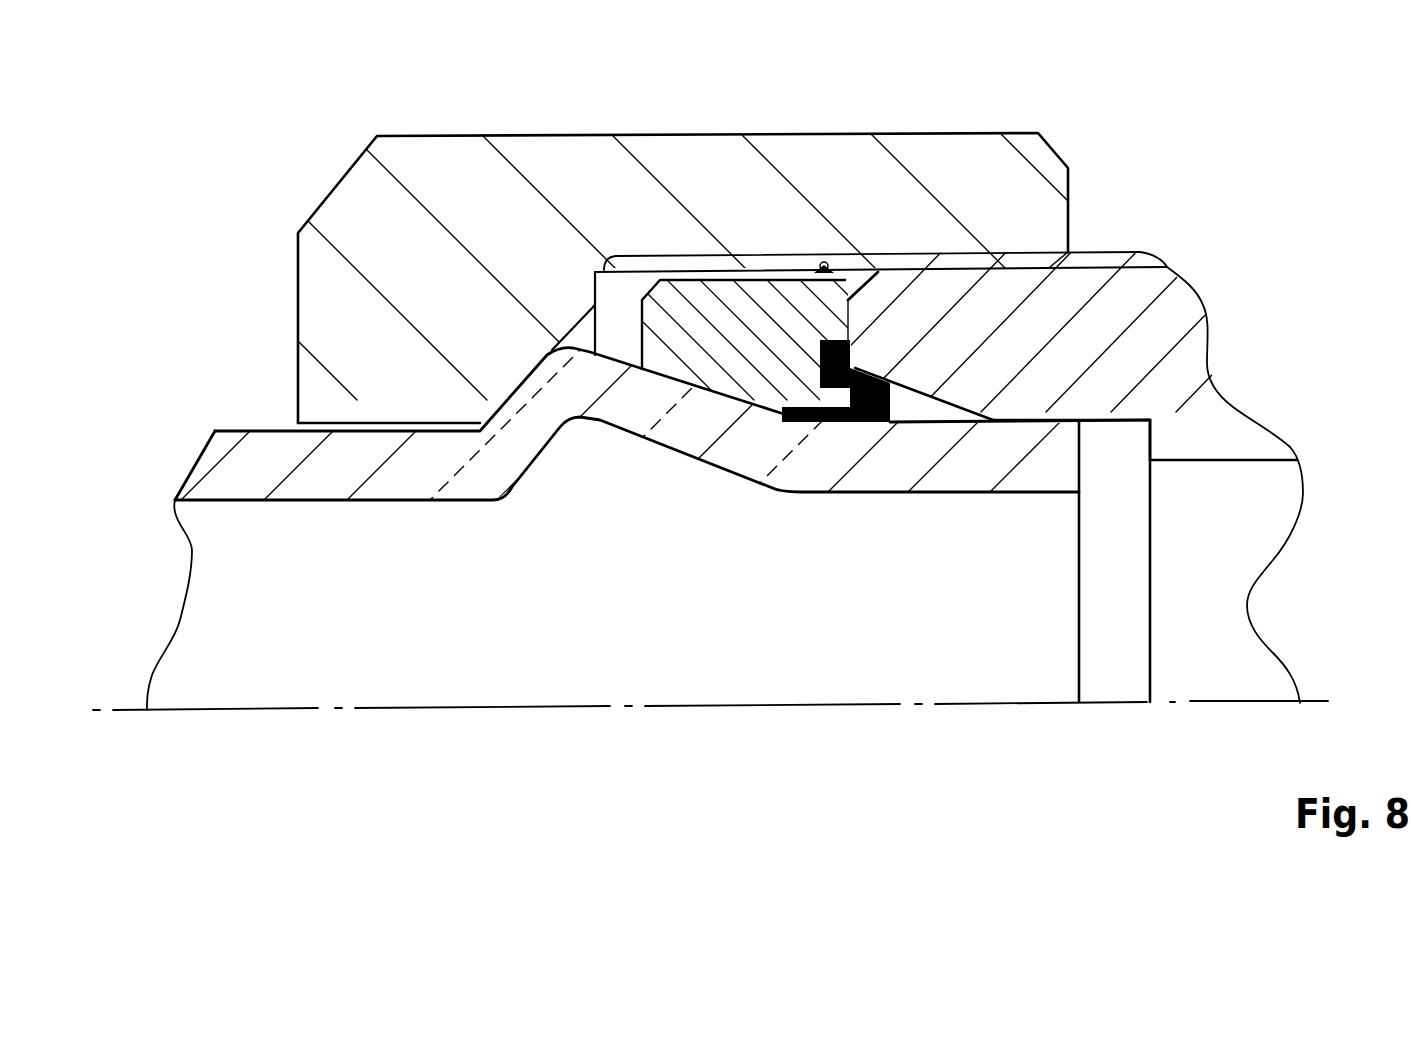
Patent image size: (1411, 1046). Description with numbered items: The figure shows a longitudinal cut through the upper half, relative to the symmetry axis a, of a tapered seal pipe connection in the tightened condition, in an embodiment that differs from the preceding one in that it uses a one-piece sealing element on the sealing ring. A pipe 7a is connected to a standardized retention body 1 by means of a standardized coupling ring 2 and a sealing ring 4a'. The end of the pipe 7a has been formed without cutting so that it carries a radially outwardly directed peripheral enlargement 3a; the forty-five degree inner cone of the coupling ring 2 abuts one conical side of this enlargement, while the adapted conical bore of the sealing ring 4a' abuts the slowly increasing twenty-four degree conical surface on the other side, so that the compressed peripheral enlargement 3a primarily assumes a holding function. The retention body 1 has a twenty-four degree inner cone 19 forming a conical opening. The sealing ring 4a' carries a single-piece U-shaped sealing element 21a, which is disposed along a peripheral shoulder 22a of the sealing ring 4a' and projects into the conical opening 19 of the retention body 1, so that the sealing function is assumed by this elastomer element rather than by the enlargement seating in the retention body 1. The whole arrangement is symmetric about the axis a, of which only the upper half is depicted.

The retention body 1 is at (1133, 290).
The coupling ring 2 is at (388, 185).
The peripheral enlargement 3a is at (565, 367).
The sealing ring 4a' is at (637, 200).
The pipe 7a is at (202, 467).
The inner cone 19 is at (912, 397).
The U-shaped sealing element 21a is at (846, 340).
The peripheral shoulder 22a is at (850, 425).
The symmetry axis a is at (112, 710).